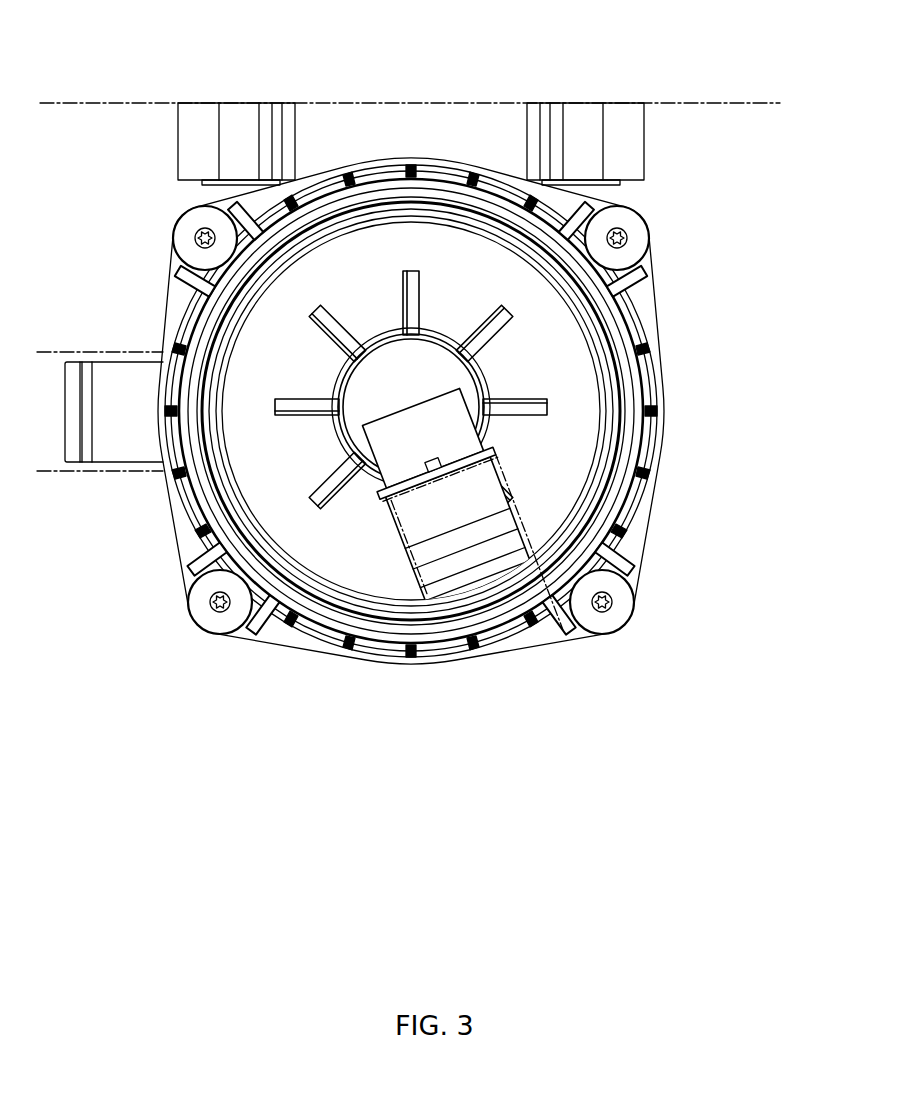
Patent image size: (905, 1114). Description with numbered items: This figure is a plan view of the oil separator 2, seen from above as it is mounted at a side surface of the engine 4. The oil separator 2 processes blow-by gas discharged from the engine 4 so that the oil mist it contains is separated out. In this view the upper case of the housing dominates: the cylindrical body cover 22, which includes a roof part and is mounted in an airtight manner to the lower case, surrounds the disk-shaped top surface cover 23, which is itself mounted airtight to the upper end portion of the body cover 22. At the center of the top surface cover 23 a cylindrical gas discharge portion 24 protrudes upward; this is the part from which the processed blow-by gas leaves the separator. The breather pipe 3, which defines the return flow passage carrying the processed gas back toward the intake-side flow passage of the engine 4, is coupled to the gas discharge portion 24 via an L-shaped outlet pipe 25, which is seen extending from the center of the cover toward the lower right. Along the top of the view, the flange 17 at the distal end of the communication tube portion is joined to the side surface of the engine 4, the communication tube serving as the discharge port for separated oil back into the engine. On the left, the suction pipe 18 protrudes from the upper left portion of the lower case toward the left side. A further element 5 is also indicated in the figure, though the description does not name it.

The oil separator 2 is at (437, 441).
The breather pipe 3 is at (436, 564).
The engine 4 is at (706, 106).
The inlet connection 5 is at (91, 352).
The flange 17 is at (479, 103).
The suction pipe 18 is at (122, 463).
The body cover 22 is at (620, 507).
The top surface cover 23 is at (298, 522).
The gas discharge portion 24 is at (462, 392).
The outlet pipe 25 is at (412, 523).